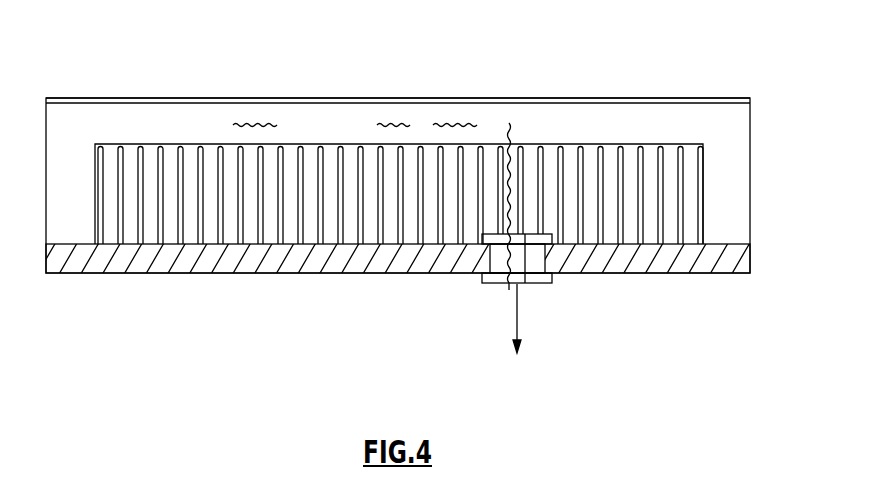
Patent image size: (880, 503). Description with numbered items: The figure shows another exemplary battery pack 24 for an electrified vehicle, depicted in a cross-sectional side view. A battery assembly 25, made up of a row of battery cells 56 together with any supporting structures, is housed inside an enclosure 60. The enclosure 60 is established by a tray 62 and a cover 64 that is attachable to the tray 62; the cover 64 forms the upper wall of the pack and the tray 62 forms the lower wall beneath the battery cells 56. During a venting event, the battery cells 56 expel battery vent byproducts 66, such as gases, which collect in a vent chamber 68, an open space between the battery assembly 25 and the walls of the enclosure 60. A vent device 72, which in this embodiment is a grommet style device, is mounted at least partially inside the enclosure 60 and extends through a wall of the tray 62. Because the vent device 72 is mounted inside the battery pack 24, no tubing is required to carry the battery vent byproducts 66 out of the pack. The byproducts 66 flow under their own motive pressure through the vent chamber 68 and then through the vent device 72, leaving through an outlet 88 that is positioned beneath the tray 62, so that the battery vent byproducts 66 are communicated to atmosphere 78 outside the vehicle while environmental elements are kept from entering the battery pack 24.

The battery pack 24 is at (181, 34).
The battery assembly 25 is at (570, 160).
The battery cells 56 is at (688, 152).
The enclosure 60 is at (736, 88).
The tray 62 is at (740, 273).
The cover 64 is at (655, 98).
The battery vent byproducts 66 is at (377, 125).
The vent chamber 68 is at (523, 130).
The vent device 72 is at (556, 268).
The atmosphere 78 is at (531, 392).
The outlet 88 is at (500, 284).